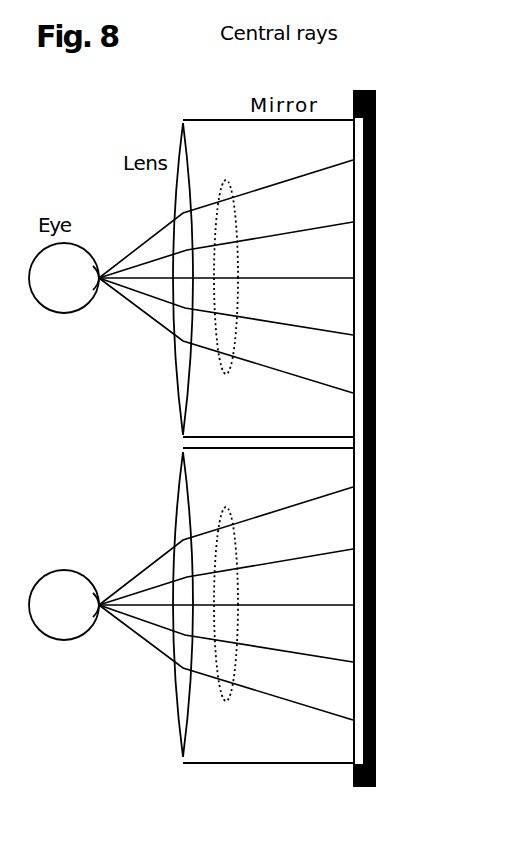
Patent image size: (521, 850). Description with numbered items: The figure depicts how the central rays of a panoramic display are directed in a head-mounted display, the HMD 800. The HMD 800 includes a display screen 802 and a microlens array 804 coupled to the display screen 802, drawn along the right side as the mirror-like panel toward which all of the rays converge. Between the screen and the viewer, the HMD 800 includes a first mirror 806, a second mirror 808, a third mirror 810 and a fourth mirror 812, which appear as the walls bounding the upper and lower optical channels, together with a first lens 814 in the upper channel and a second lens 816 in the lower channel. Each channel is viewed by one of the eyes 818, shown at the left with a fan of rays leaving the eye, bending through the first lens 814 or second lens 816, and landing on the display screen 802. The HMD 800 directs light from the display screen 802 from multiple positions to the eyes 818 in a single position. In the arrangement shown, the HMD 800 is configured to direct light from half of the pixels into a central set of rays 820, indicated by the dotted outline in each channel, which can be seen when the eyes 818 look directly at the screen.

The HMD 800 is at (447, 130).
The display screen 802 is at (377, 417).
The microlens array 804 is at (358, 745).
The first mirror 806 is at (220, 120).
The second mirror 808 is at (313, 436).
The third mirror 810 is at (205, 448).
The fourth mirror 812 is at (245, 763).
The first lens 814 is at (180, 383).
The second lens 816 is at (182, 700).
The eyes 818 is at (73, 288).
The central set of rays 820 is at (236, 215).